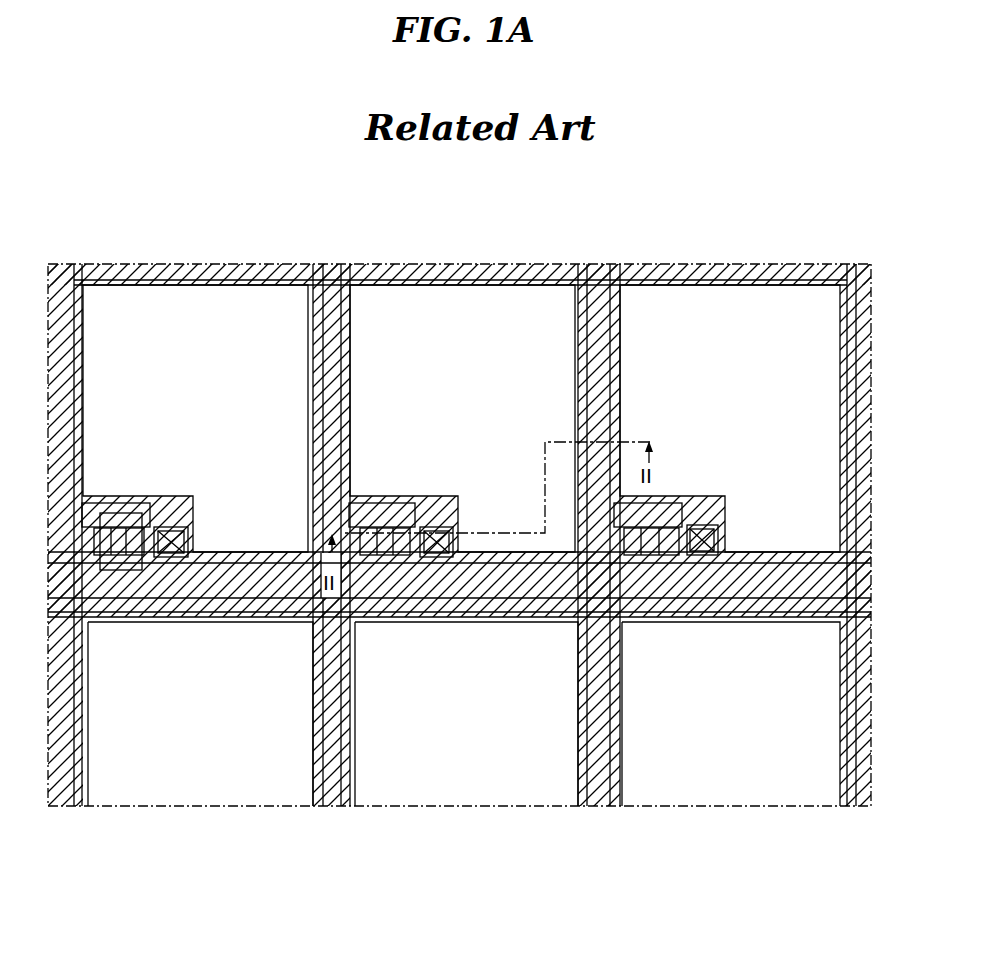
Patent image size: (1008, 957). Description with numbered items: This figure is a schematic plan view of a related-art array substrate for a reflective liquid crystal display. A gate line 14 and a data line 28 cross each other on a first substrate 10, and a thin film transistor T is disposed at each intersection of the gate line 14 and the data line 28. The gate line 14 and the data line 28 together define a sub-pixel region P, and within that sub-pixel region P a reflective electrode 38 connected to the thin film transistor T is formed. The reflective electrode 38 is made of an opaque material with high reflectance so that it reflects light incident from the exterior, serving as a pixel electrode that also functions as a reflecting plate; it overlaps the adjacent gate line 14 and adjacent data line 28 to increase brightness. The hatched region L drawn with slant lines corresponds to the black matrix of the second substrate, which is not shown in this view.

The first substrate 10 is at (736, 263).
The gate line 14 is at (870, 563).
The data line 28 is at (620, 808).
The reflective electrode 38 is at (213, 313).
The sub-pixel region P is at (144, 300).
The region of slant lines L is at (524, 284).
The thin film transistor T is at (140, 510).